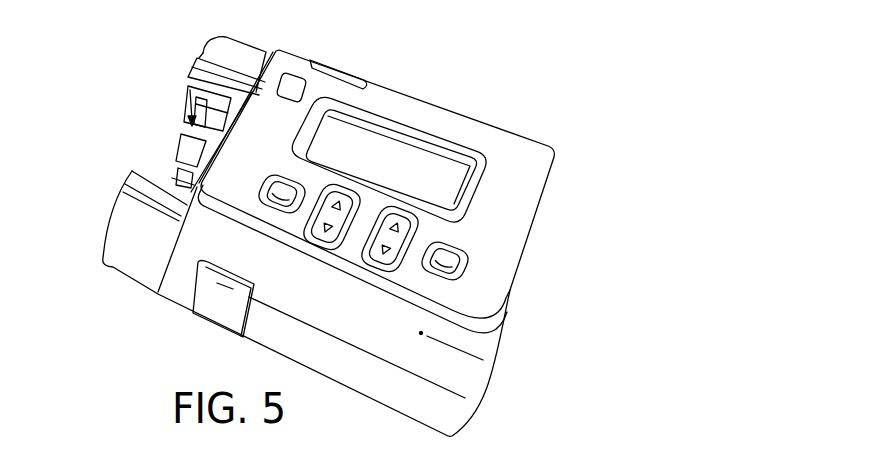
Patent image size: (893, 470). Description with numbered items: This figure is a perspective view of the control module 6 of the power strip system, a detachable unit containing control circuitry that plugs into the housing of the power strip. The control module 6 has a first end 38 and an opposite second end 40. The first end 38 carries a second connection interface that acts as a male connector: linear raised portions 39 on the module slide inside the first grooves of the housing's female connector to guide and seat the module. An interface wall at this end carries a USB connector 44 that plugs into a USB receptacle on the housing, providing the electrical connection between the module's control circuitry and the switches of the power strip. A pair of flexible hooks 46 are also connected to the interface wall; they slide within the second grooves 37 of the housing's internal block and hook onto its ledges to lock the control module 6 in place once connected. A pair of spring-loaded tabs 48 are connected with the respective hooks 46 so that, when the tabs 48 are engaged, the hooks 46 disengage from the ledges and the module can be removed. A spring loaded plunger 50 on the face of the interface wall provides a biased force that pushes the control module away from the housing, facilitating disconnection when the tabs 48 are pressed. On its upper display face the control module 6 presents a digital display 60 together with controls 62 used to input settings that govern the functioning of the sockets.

The control module 6 is at (497, 80).
The second groves 37 is at (183, 6).
The first end 38 is at (103, 234).
The linear raised portions 39 is at (228, 77).
The second end 40 is at (495, 343).
The USB connector 44 is at (191, 148).
The flexible hooks 46 is at (192, 99).
The spring-loaded tabs 48 is at (338, 72).
The spring loaded plunger 50 is at (180, 182).
The digital display 60 is at (423, 173).
The controls 62 is at (282, 180).